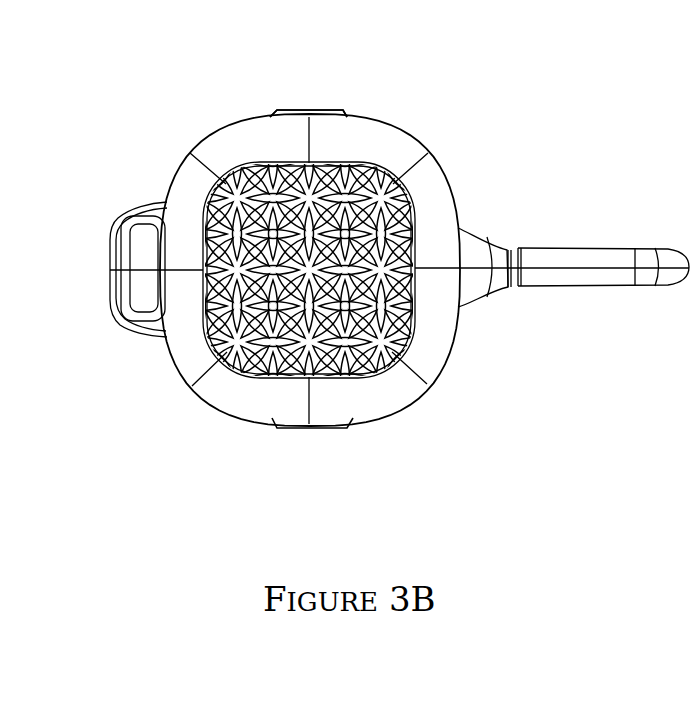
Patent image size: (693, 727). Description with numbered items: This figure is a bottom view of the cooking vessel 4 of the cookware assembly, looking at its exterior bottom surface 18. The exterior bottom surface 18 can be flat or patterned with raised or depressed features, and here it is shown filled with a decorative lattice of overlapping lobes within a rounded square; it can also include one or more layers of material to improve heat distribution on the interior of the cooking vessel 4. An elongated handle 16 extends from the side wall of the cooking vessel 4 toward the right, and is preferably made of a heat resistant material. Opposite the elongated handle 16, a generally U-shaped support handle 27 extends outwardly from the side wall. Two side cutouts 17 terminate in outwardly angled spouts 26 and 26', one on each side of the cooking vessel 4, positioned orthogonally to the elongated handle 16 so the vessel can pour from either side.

The cooking vessel 4 is at (469, 134).
The elongated handle 16 is at (635, 308).
The side cutout 17 is at (343, 112).
The exterior bottom surface 18 is at (383, 363).
The spout 26 is at (312, 451).
The spout 26' is at (308, 81).
The support handle 27 is at (110, 196).